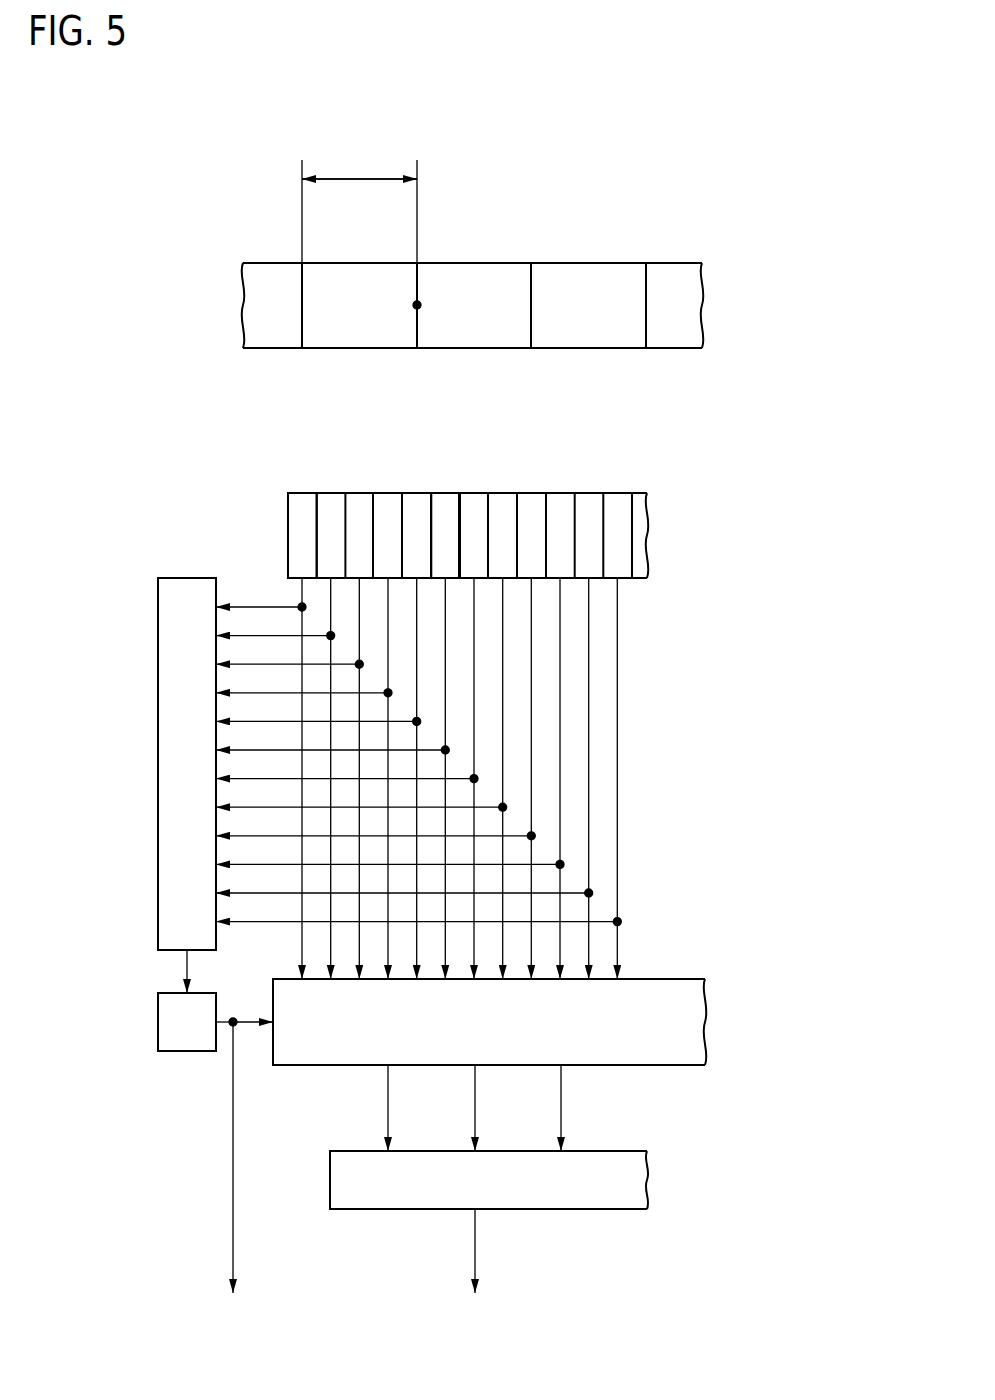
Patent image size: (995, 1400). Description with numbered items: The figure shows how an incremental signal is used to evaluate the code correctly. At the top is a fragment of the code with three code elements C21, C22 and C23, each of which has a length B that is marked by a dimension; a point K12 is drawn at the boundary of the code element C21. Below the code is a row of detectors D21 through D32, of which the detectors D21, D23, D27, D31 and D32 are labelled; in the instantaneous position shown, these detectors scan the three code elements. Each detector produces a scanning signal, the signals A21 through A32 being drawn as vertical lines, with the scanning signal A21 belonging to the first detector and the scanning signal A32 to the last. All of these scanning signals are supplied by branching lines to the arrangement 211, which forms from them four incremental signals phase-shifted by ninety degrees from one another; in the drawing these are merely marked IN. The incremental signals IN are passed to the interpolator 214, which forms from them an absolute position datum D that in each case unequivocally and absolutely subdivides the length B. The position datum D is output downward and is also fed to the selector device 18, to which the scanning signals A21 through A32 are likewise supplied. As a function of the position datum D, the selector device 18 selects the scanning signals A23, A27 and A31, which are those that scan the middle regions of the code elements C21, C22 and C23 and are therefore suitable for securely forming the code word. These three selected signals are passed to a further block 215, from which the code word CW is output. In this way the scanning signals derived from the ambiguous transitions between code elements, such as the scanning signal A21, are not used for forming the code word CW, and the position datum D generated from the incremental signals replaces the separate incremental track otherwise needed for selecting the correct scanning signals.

The length B is at (359, 201).
The code element C21 is at (346, 283).
The code element C22 is at (468, 285).
The code element C23 is at (592, 288).
The cell boundary point K12 is at (417, 305).
The detector D21 is at (298, 510).
The detector D23 is at (355, 510).
The detector D27 is at (470, 510).
The detector D31 is at (583, 510).
The detector D32 is at (615, 508).
The scanning signal A21 is at (262, 607).
The scanning signal A32 is at (617, 638).
The arrangement 211 is at (172, 610).
The incremental signals IN is at (187, 963).
The interpolator 214 is at (167, 1033).
The position datum D is at (233, 1208).
The selector device 18 is at (677, 1013).
The scanning signal A23 is at (388, 1116).
The scanning signal A27 is at (475, 1116).
The scanning signal A31 is at (561, 1116).
The code word generator 215 is at (403, 1192).
The code word CW is at (475, 1240).